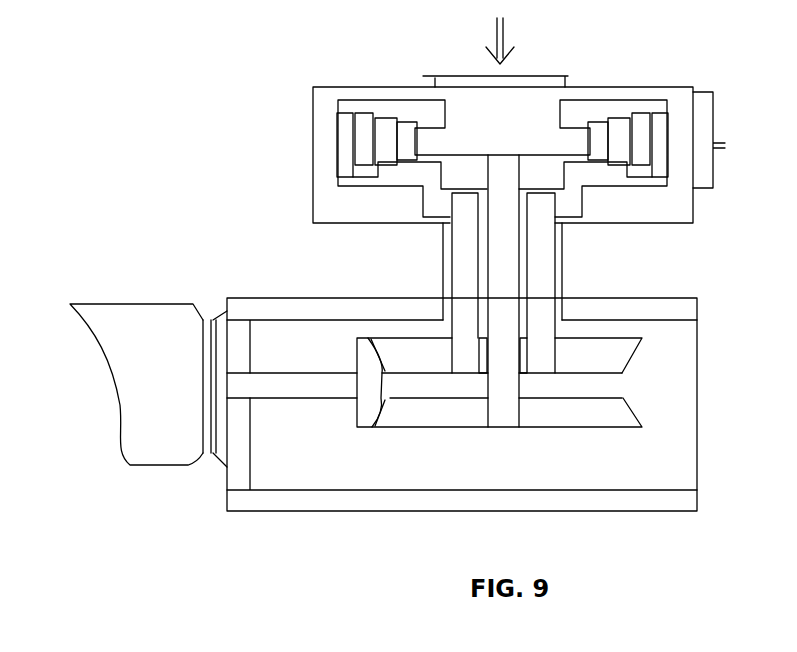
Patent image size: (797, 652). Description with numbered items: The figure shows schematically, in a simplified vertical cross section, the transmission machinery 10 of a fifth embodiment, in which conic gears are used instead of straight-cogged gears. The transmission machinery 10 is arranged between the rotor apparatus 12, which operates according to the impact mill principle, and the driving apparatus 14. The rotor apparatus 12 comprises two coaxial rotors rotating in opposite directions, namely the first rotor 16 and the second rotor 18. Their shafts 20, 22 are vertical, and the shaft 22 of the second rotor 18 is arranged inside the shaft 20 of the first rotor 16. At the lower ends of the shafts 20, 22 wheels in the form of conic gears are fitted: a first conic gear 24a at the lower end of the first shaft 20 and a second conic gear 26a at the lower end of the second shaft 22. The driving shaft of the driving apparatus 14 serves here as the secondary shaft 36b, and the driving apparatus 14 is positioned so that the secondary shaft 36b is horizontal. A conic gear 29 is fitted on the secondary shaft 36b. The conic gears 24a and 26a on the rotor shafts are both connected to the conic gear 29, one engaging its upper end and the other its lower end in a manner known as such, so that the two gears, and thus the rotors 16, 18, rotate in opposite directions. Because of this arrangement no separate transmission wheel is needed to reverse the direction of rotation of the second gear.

The transmission machinery 10 is at (273, 252).
The rotor apparatus 12 is at (288, 97).
The driving apparatus 14 is at (111, 285).
The first rotor 16 is at (612, 177).
The second rotor 18 is at (592, 107).
The shaft of the first rotor 20 is at (543, 253).
The shaft of the second rotor 22 is at (500, 248).
The first conic gear 24a is at (618, 358).
The second conic gear 26a is at (552, 415).
The conic gear 29 is at (367, 362).
The secondary shaft 36b is at (297, 392).